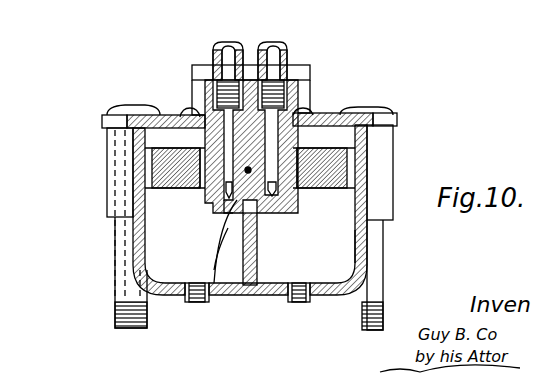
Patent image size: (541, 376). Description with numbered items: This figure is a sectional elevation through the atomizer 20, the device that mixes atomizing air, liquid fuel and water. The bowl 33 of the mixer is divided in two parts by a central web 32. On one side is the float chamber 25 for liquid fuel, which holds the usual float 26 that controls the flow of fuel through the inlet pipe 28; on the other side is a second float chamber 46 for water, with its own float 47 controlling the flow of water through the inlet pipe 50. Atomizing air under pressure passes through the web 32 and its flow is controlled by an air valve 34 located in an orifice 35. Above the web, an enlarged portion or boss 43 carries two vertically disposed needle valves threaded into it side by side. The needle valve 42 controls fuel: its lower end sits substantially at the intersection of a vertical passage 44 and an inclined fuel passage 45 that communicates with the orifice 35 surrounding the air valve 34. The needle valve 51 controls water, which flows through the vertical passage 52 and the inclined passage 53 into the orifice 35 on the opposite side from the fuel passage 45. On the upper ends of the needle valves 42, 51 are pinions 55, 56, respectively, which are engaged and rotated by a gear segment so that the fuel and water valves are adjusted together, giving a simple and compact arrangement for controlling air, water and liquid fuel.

The atomizer 20 is at (367, 170).
The float chamber 25 is at (163, 262).
The float 26 is at (165, 127).
The inlet pipe 28 is at (120, 240).
The web 32 is at (255, 263).
The bowl 33 is at (368, 247).
The valve 34 is at (248, 170).
The orifice 35 is at (228, 232).
The needle valve 42 is at (247, 80).
The enlarged portion 43 is at (295, 100).
The vertical passage 44 is at (230, 200).
The inclined fuel passage 45 is at (237, 212).
The second float chamber 46 is at (373, 265).
The float 47 is at (343, 113).
The inlet pipe 50 is at (378, 292).
The needle valve 51 is at (306, 108).
The vertical passage 52 is at (283, 205).
The inclined passage 53 is at (264, 215).
The pinion 55 is at (216, 48).
The pinion 56 is at (288, 52).